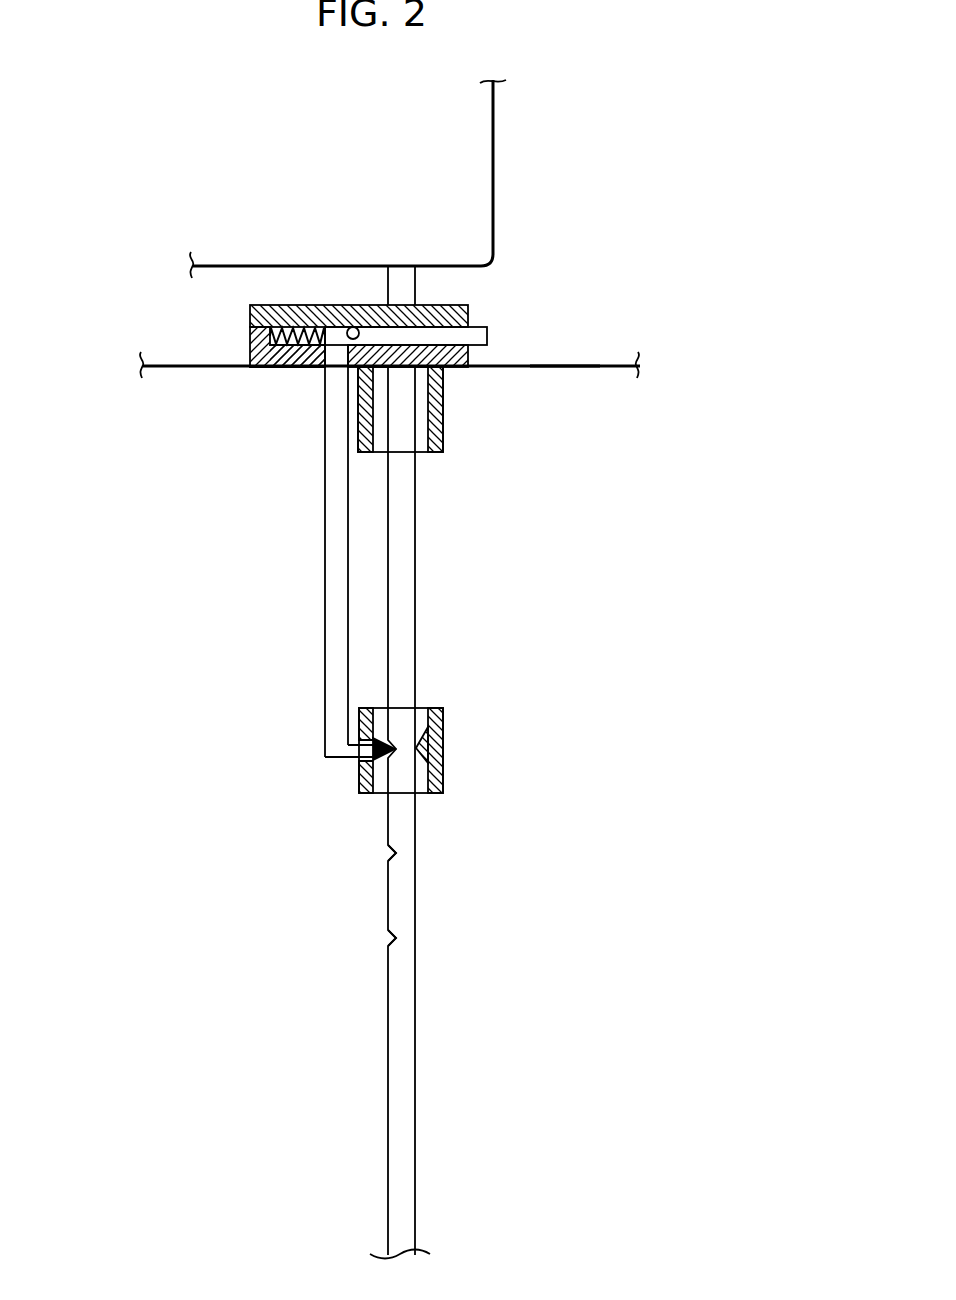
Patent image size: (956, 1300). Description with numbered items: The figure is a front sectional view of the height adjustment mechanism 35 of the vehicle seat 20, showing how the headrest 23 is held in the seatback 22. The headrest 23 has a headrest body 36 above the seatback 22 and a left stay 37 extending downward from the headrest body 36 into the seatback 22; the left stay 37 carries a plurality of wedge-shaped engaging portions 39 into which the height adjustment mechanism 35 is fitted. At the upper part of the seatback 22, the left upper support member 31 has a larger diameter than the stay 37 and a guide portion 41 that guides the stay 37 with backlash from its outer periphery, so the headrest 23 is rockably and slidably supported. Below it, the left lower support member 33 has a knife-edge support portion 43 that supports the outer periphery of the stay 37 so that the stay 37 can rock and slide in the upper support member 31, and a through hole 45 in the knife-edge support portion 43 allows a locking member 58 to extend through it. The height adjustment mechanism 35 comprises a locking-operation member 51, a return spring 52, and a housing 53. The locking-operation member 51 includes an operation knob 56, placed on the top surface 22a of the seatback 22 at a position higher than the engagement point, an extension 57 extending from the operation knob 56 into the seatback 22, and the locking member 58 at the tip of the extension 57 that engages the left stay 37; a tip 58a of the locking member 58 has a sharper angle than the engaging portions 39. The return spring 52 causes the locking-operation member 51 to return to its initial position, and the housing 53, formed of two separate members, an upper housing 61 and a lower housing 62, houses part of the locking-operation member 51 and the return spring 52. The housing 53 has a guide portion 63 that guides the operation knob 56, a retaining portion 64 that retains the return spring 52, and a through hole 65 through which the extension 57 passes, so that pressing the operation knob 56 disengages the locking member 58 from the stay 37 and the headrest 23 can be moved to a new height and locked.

The vehicle seat 20 is at (112, 76).
The seatback 22 is at (594, 362).
The top surface of the seatback 22a is at (555, 365).
The headrest 23 is at (508, 90).
The left upper support member 31 is at (449, 415).
The left lower support member 33 is at (449, 780).
The height adjustment mechanism 35 is at (519, 307).
The headrest body 36 is at (478, 164).
The left stay 37 is at (398, 278).
The engaging portions 39 is at (388, 855).
The left guide portion 41 is at (433, 390).
The knife-edge support portion 43 is at (427, 738).
The through hole 45 is at (372, 746).
The locking-operation member 51 is at (323, 546).
The return spring 52 is at (307, 369).
The housing 53 is at (105, 245).
The operation knob 56 is at (483, 323).
The extension 57 is at (334, 600).
The locking member 58 is at (345, 757).
The tip of the locking member 58a is at (383, 740).
The upper housing 61 is at (250, 318).
The lower housing 62 is at (248, 350).
The guide portion 63 is at (350, 318).
The retaining portion 64 is at (283, 333).
The through hole 65 is at (347, 330).